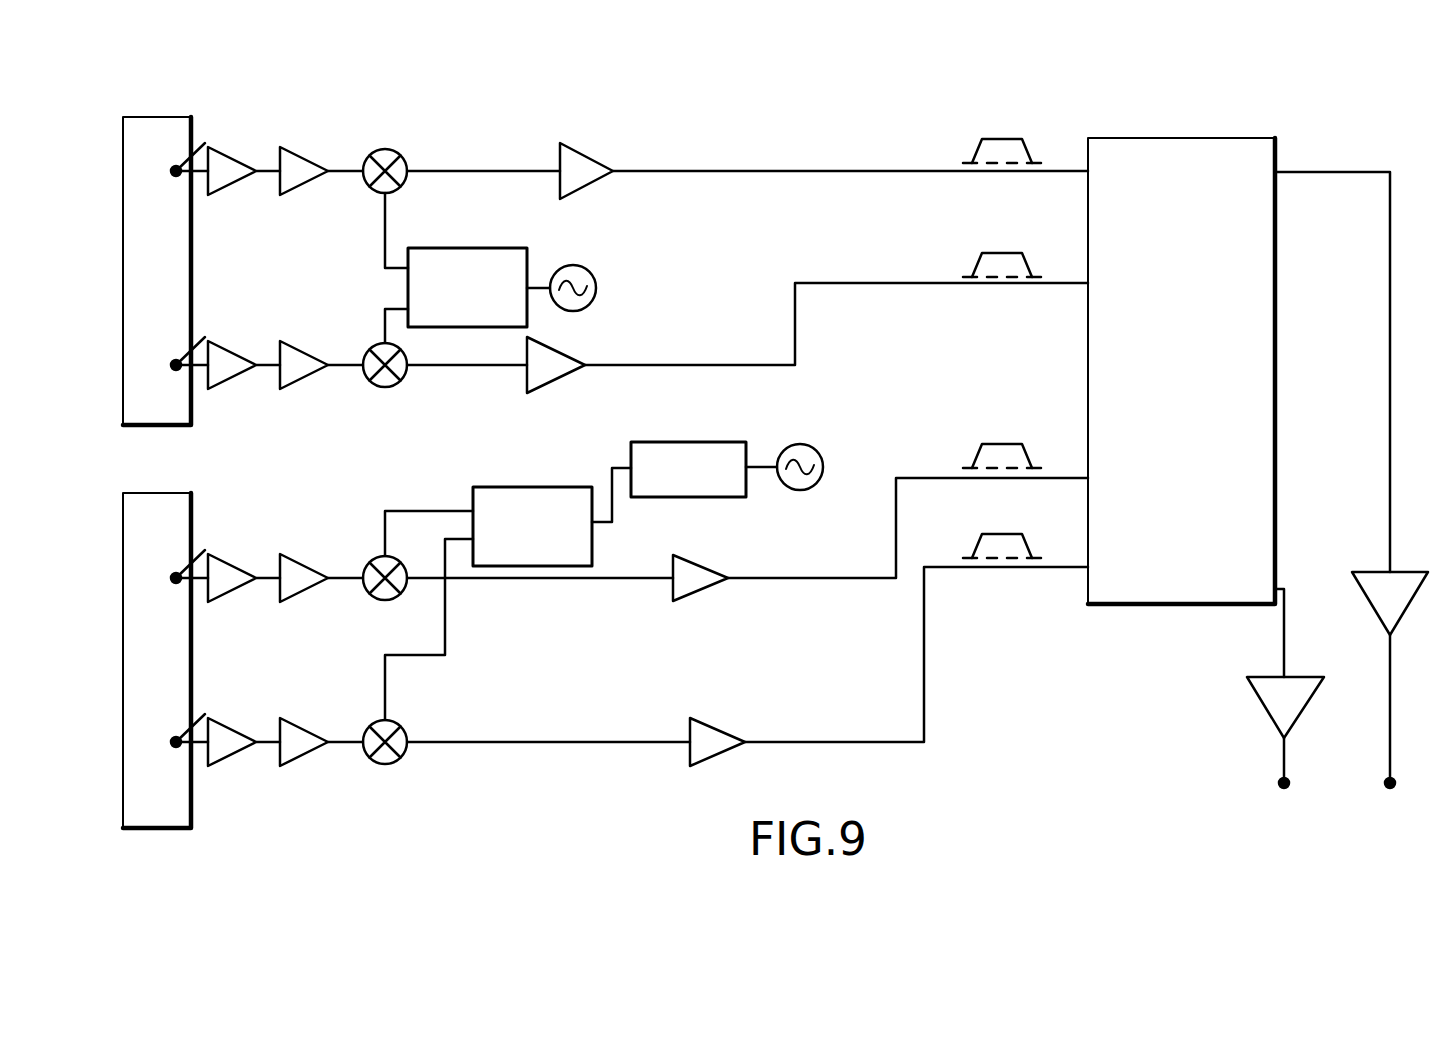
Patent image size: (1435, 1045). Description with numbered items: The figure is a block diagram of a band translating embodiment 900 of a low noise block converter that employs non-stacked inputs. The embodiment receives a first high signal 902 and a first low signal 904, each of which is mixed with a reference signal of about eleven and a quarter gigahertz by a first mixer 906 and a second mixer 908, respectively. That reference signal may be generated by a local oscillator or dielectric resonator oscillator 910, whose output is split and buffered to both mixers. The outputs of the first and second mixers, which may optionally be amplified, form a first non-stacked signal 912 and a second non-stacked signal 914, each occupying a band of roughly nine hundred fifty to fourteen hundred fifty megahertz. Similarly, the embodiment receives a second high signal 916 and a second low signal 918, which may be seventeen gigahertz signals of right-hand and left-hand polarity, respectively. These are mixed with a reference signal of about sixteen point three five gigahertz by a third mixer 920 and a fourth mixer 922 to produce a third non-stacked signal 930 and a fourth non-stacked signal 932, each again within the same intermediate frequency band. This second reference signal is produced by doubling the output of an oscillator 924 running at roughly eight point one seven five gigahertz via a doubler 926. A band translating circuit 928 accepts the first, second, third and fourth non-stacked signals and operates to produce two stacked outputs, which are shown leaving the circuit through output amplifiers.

The band translating embodiment 900 is at (980, 78).
The first high signal 902 is at (205, 143).
The first low signal 904 is at (205, 337).
The first mixer 906 is at (385, 149).
The second mixer 908 is at (381, 387).
The dielectric resonator oscillator 910 is at (580, 266).
The first non-stacked signal 912 is at (976, 158).
The second non-stacked signal 914 is at (976, 263).
The second high signal 916 is at (205, 550).
The second low signal 918 is at (205, 714).
The third mixer 920 is at (372, 560).
The fourth mixer 922 is at (372, 724).
The oscillator 924 is at (808, 445).
The doubler 926 is at (712, 442).
The band translating circuit 928 is at (1195, 138).
The third non-stacked signal 930 is at (978, 453).
The fourth non-stacked signal 932 is at (978, 545).